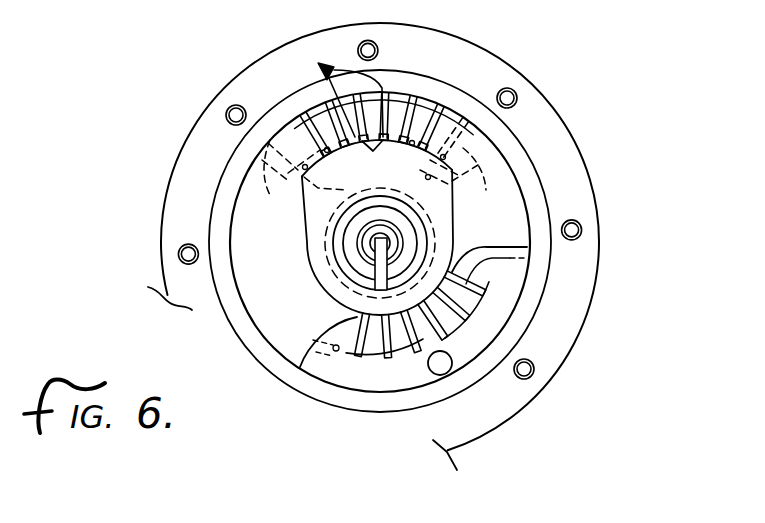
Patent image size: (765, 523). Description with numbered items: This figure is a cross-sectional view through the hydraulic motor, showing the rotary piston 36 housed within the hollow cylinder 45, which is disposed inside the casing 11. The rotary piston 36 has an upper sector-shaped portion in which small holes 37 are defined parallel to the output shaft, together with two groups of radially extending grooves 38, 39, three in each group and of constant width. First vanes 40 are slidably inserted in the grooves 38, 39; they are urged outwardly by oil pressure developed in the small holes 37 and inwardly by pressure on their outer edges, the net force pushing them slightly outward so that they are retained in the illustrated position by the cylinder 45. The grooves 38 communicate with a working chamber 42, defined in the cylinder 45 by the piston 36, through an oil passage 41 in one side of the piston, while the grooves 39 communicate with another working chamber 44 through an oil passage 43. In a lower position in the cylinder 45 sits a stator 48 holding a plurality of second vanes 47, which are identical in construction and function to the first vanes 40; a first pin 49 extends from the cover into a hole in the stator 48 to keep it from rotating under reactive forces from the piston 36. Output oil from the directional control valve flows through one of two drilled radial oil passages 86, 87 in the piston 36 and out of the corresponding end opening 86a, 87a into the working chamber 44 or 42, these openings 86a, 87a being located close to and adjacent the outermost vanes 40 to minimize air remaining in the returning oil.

The casing 11 is at (481, 33).
The rotary piston 36 is at (443, 228).
The small holes 37 is at (378, 161).
The grooves 38 is at (412, 103).
The grooves 39 is at (309, 129).
The first vanes 40 is at (343, 86).
The oil passage 41 is at (411, 147).
The working chamber 42 is at (506, 209).
The oil passage 43 is at (330, 153).
The working chamber 44 is at (288, 294).
The hollow cylinder 45 is at (513, 157).
The second vanes 47 is at (472, 293).
The stator 48 is at (366, 384).
The first pin 49 is at (441, 365).
The oil passage 86 is at (318, 188).
The end opening 86a is at (280, 138).
The oil passage 87 is at (452, 181).
The end opening 87a is at (463, 148).